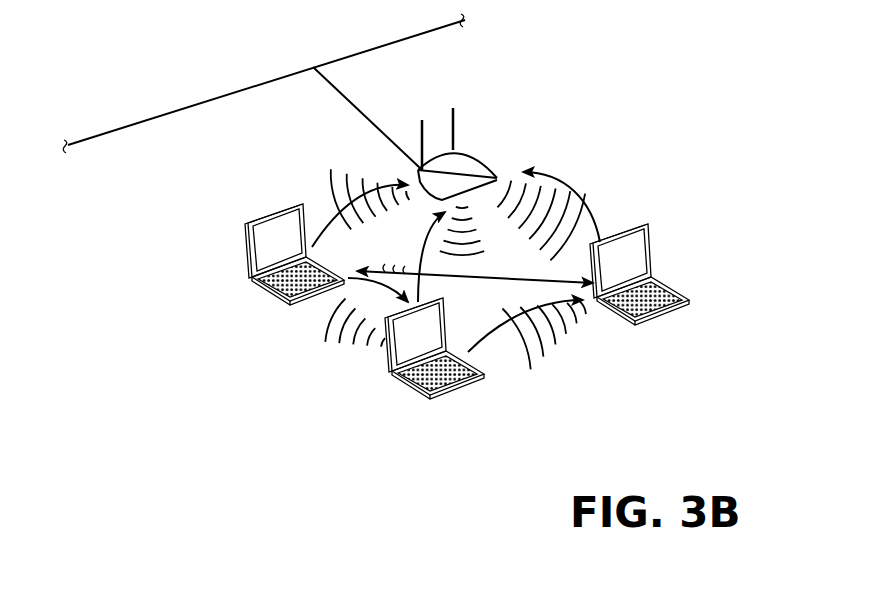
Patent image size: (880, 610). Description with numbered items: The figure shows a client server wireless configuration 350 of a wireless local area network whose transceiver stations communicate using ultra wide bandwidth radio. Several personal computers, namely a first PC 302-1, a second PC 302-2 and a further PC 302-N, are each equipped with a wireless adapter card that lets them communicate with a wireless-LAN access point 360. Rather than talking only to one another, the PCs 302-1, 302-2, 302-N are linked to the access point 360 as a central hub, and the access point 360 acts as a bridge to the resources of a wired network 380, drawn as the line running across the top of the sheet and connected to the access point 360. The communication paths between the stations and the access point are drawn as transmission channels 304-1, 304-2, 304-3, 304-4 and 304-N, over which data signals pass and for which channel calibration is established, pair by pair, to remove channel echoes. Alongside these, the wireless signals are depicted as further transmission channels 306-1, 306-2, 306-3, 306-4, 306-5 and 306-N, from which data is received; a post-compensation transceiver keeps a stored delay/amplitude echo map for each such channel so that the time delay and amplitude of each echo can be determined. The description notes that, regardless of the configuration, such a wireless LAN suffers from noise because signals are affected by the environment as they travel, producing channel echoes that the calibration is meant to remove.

The wired network 380 is at (160, 112).
The wireless-LAN access point 360 is at (482, 166).
The client server wireless configuration 350 is at (200, 466).
The personal computer 302-N is at (250, 262).
The personal computer 302-2 is at (387, 360).
The personal computer 302-1 is at (648, 245).
The transmission channel 304-1 is at (590, 175).
The transmission channel 304-2 is at (420, 297).
The transmission channel 304-3 is at (548, 352).
The transmission channel 304-4 is at (393, 200).
The transmission channel 304-N is at (347, 342).
The transmission channel 306-1 is at (585, 203).
The transmission channel 306-2 is at (428, 240).
The transmission channel 306-3 is at (498, 343).
The transmission channel 306-4 is at (337, 197).
The transmission channel 306-5 is at (592, 313).
The transmission channel 306-N is at (400, 290).